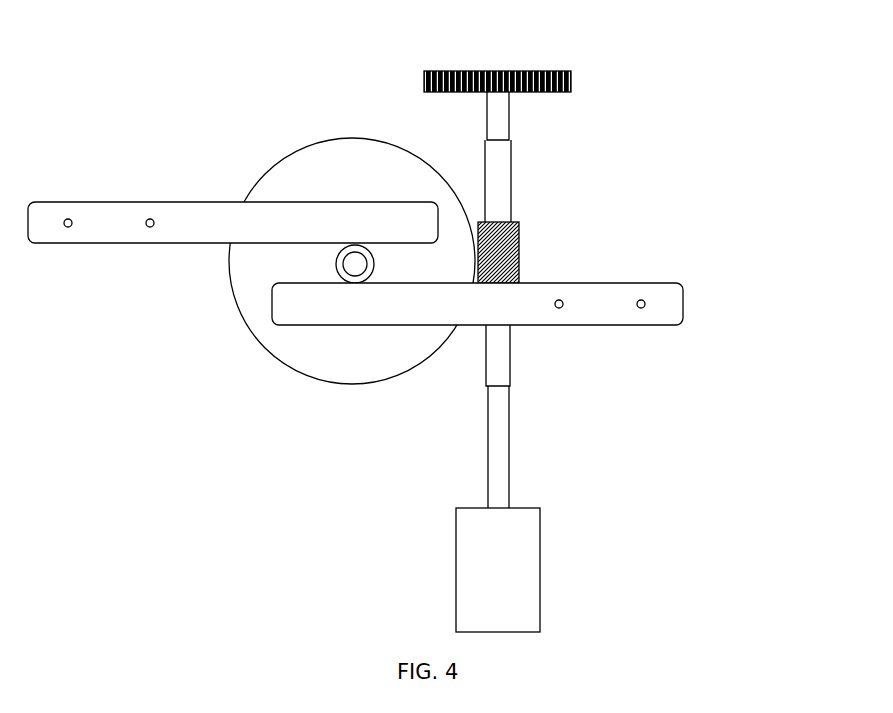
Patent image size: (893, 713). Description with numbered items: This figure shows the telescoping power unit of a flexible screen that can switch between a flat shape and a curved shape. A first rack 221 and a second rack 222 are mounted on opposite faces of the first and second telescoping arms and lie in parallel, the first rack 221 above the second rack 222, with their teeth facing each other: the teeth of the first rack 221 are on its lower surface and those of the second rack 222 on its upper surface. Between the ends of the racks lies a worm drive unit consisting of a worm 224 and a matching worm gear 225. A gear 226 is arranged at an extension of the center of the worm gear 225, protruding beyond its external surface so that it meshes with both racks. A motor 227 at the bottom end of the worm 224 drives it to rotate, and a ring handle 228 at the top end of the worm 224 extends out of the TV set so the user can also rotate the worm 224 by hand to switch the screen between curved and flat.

The first rack 221 is at (87, 220).
The second rack 222 is at (672, 303).
The worm 224 is at (495, 190).
The worm gear 225 is at (320, 364).
The gear 226 is at (352, 258).
The motor 227 is at (514, 537).
The ring handle 228 is at (553, 67).